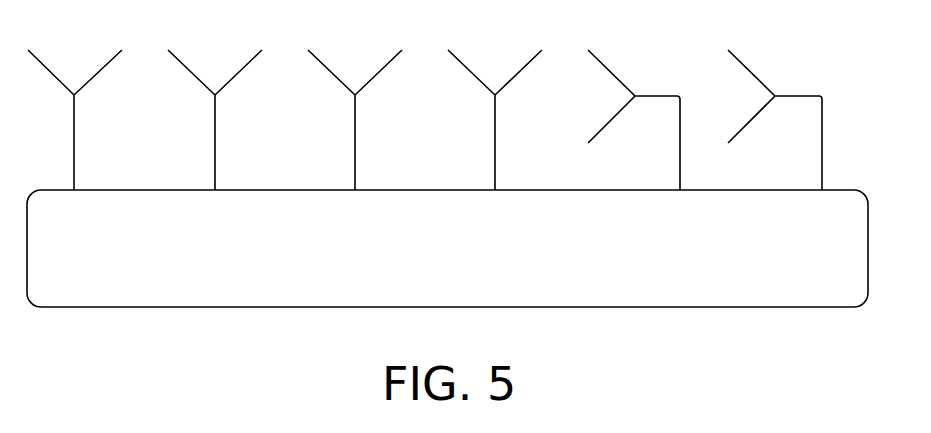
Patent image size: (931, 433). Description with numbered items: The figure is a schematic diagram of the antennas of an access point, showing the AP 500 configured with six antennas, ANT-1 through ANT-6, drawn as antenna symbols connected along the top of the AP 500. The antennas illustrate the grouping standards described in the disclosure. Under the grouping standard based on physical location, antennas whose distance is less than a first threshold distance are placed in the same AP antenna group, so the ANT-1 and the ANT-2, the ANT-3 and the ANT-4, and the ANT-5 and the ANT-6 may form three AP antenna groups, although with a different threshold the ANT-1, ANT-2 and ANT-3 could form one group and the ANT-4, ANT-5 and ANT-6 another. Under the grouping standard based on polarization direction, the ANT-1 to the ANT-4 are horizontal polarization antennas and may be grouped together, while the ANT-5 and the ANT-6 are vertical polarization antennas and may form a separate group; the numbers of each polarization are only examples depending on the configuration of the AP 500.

The AP 500 is at (447, 248).
The element ANT-1 is at (75, 141).
The element ANT-2 is at (215, 141).
The element ANT-3 is at (355, 141).
The element ANT-4 is at (495, 141).
The element ANT-5 is at (634, 141).
The element ANT-6 is at (775, 141).